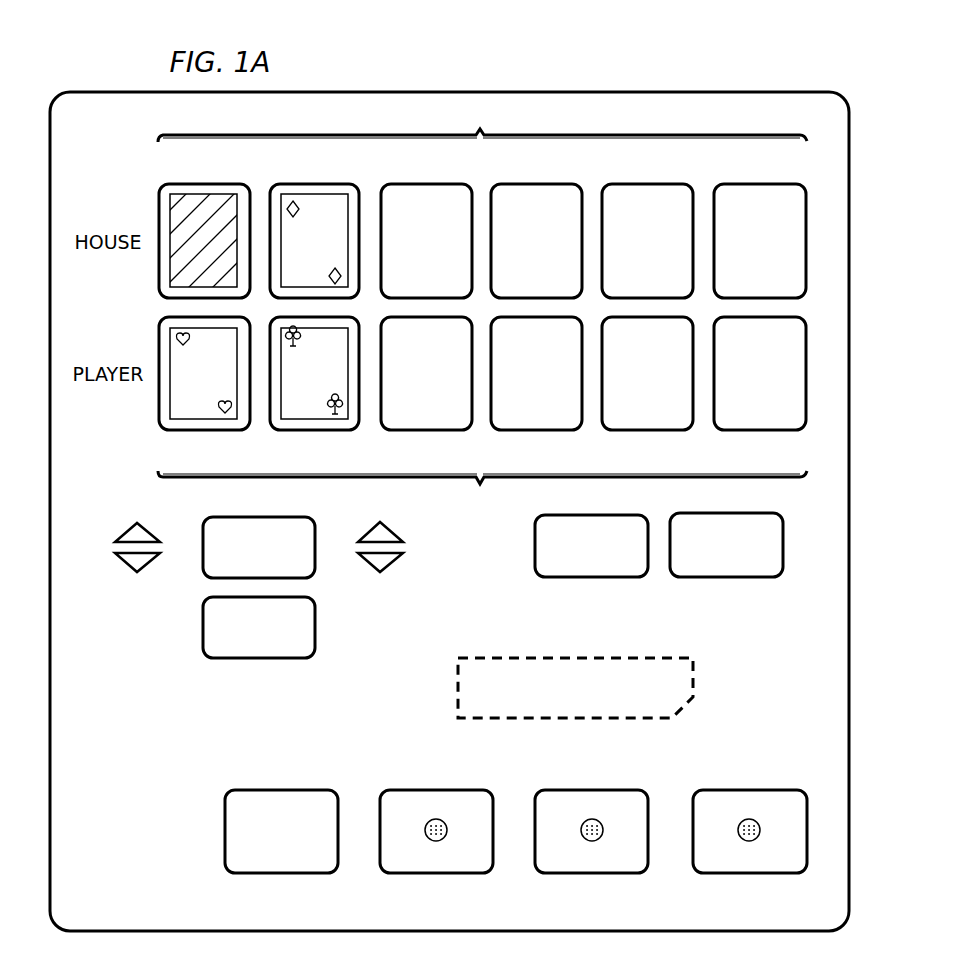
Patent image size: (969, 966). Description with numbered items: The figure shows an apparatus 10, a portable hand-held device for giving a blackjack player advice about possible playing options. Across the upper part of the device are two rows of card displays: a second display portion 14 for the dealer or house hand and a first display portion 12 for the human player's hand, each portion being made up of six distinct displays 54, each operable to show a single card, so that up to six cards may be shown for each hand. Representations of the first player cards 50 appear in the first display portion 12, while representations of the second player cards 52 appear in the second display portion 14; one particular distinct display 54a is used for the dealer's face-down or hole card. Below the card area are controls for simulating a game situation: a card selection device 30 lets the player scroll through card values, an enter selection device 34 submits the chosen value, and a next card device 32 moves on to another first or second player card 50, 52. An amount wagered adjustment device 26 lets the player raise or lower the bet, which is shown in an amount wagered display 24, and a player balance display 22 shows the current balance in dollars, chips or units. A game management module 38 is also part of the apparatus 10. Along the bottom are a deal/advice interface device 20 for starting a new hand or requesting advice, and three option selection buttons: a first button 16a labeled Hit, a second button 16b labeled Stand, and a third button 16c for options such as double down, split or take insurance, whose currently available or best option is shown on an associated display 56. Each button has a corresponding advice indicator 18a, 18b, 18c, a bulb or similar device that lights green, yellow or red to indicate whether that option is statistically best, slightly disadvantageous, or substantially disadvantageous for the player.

The apparatus 10 is at (732, 88).
The first display portion 12 is at (482, 492).
The second display portion 14 is at (482, 122).
The first button 16a is at (439, 855).
The second button 16b is at (594, 855).
The third button 16c is at (751, 855).
The advice indicator 18a is at (434, 842).
The advice indicator 18b is at (590, 842).
The advice indicator 18c is at (747, 842).
The deal/advice interface device 20 is at (280, 875).
The player balance display 22 is at (783, 546).
The amount wagered display 24 is at (535, 546).
The amount wagered adjustment device 26 is at (390, 528).
The card selection device 30 is at (123, 530).
The next card device 32 is at (203, 530).
The enter selection device 34 is at (260, 660).
The game management module 38 is at (458, 697).
The first player cards 50 is at (203, 420).
The second player cards 52 is at (204, 193).
The distinct displays 54 is at (412, 252).
The distinct display 54a is at (158, 210).
The display 56 is at (753, 783).